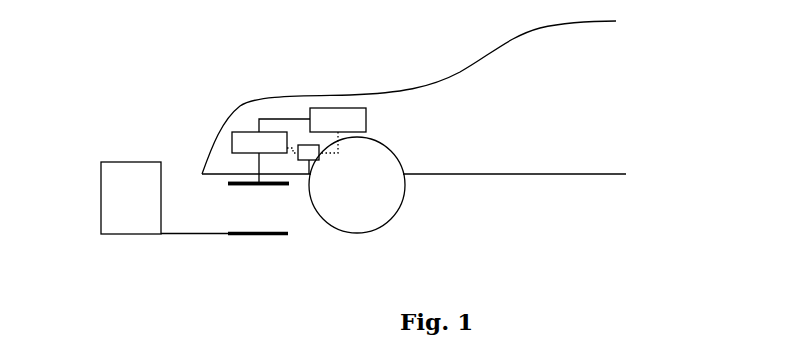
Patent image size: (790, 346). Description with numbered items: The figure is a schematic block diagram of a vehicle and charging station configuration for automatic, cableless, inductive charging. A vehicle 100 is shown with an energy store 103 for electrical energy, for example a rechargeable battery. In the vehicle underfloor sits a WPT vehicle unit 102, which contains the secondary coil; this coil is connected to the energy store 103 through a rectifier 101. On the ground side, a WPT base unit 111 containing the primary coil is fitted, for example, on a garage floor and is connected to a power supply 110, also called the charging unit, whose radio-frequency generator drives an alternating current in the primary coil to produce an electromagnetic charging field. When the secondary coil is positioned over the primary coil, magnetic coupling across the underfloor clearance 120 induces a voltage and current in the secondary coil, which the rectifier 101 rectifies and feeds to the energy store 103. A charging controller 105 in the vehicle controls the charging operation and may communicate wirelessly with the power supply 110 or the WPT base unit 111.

The vehicle 100 is at (458, 47).
The rectifier 101 is at (242, 137).
The WPT vehicle unit 102 is at (268, 185).
The energy store 103 is at (326, 112).
The charging controller 105 is at (302, 145).
The power supply 110 is at (113, 198).
The WPT base unit 111 is at (288, 234).
The underfloor clearance 120 is at (241, 206).